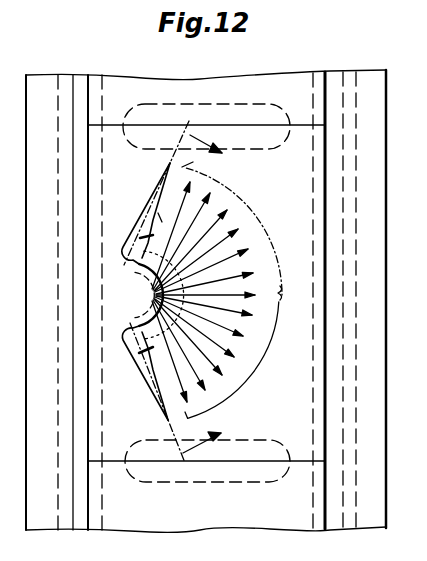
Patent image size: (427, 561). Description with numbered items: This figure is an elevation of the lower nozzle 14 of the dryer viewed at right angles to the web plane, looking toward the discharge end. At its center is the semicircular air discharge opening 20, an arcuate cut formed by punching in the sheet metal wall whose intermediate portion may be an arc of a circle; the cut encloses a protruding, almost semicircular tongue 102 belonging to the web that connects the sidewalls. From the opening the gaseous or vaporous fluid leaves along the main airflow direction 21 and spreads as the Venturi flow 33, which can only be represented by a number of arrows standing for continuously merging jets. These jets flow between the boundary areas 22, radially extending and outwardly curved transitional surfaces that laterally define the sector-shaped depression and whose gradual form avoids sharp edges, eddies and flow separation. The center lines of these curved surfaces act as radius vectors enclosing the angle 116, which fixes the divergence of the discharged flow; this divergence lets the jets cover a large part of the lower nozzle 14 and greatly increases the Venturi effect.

The lower nozzle 14 is at (302, 407).
The semicircular air discharge opening 20 is at (154, 277).
The main airflow direction 21 is at (274, 333).
The boundary areas 22 is at (141, 229).
The Venturi flow 33 is at (249, 235).
The tongue 102 is at (147, 302).
The angle of divergence 116 is at (158, 213).